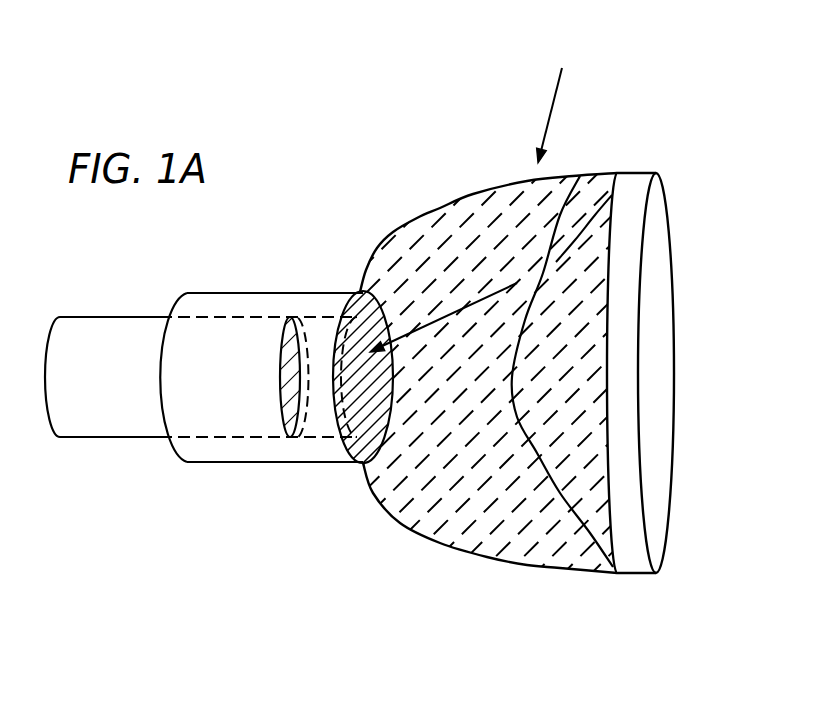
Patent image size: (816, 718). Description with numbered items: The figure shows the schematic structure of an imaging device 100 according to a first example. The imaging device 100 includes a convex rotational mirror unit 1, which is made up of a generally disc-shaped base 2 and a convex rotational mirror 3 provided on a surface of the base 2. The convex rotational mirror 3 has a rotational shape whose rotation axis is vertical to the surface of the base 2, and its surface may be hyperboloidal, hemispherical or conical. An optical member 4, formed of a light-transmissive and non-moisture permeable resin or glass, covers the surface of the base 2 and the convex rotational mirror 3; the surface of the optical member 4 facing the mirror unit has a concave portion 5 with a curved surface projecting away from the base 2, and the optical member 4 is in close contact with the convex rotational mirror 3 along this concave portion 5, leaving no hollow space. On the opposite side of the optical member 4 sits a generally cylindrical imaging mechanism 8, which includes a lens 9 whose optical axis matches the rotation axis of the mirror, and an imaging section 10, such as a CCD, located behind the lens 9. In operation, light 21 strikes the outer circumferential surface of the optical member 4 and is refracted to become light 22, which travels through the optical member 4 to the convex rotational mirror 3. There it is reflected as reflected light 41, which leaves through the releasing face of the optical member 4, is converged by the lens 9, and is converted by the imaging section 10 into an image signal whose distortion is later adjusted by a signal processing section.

The imaging device 100 is at (662, 92).
The convex rotational mirror unit 1 is at (658, 645).
The base 2 is at (643, 573).
The convex rotational mirror 3 is at (598, 490).
The optical member 4 is at (420, 550).
The concave portion 5 is at (558, 264).
The imaging mechanism 8 is at (277, 502).
The lens 9 is at (283, 420).
The imaging section 10 is at (143, 403).
The light 21 is at (553, 92).
The light 22 is at (523, 290).
The reflected light 41 is at (440, 317).